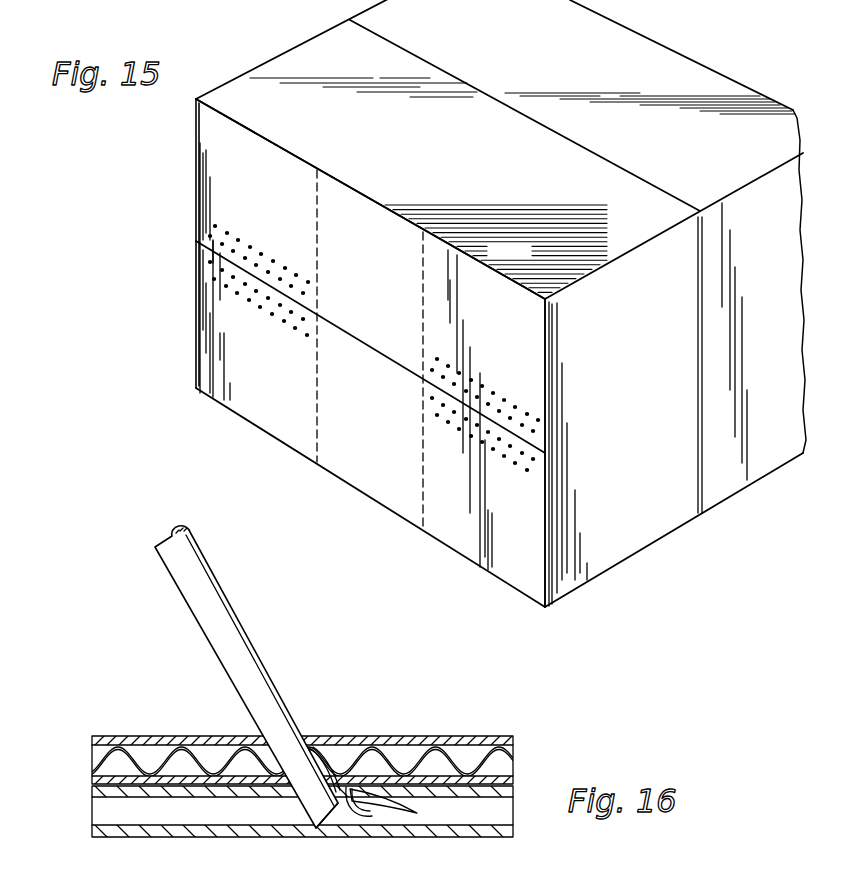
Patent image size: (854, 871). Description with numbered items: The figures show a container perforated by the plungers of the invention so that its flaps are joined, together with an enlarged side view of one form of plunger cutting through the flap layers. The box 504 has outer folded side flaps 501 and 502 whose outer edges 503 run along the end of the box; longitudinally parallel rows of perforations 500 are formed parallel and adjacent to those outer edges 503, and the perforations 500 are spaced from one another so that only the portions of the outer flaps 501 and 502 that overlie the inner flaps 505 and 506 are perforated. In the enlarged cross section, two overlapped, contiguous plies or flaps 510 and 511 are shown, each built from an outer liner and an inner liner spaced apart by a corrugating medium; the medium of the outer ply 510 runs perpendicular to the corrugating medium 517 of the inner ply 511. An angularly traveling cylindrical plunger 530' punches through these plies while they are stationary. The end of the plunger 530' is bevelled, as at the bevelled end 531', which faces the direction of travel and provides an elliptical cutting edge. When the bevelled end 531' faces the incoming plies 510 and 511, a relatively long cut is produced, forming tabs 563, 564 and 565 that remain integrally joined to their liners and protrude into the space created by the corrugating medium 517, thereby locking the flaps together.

In FIG. 15, the perforations 500 is at (238, 244).
In FIG. 15, the outer flap 501 is at (205, 177).
In FIG. 15, the outer flap 502 is at (205, 335).
In FIG. 15, the outer edges 503 is at (338, 328).
In FIG. 15, the box 504 is at (278, 57).
In FIG. 15, the inner flap 505 is at (262, 158).
In FIG. 15, the inner flap 506 is at (468, 280).
In FIG. 16, the outer ply 510 is at (91, 764).
In FIG. 16, the inner ply 511 is at (91, 814).
In FIG. 16, the corrugating medium 517 is at (504, 817).
In FIG. 16, the plunger 530' is at (246, 677).
In FIG. 16, the bevelled end 531' is at (326, 832).
In FIG. 16, the tab 563 is at (328, 742).
In FIG. 16, the tab 564 is at (366, 819).
In FIG. 16, the cut liner tongue 565 is at (405, 807).